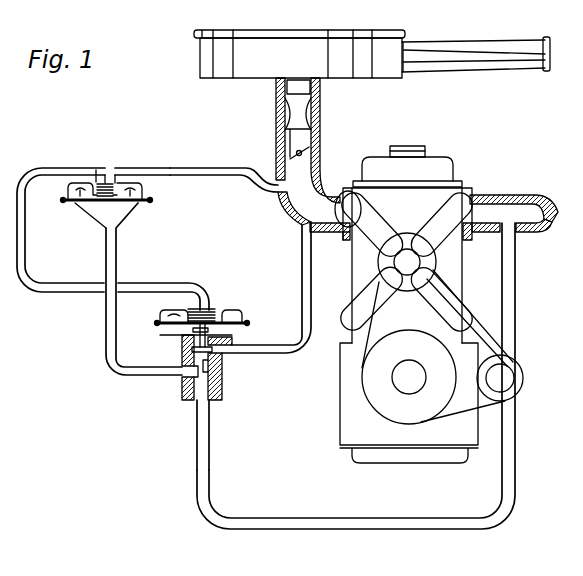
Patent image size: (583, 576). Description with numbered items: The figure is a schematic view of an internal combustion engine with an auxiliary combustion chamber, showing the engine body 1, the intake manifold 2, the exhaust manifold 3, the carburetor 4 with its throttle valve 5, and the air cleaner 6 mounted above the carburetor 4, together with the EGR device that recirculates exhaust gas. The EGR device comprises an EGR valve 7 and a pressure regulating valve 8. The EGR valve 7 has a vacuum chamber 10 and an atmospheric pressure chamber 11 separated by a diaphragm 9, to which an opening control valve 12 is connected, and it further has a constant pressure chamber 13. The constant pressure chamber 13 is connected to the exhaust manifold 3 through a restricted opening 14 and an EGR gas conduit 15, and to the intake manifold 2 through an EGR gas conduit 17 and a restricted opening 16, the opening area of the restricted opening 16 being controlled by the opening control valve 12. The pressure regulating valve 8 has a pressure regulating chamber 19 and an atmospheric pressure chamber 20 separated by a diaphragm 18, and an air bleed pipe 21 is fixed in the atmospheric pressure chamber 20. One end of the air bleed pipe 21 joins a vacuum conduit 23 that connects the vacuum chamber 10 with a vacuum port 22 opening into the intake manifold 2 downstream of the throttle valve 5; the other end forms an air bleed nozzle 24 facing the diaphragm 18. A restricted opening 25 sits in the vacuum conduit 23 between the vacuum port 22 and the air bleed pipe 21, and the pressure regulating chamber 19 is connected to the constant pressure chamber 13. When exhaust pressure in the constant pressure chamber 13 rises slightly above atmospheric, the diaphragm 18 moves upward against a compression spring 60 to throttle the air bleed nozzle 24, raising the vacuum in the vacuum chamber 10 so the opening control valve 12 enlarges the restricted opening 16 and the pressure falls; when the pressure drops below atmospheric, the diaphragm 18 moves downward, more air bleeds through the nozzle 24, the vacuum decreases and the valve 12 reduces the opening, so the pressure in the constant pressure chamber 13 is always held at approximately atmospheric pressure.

The engine body 1 is at (438, 190).
The intake manifold 2 is at (318, 176).
The exhaust manifold 3 is at (515, 197).
The carburetor 4 is at (293, 111).
The throttle valve 5 is at (290, 131).
The air cleaner 6 is at (361, 43).
The EGR valve 7 is at (222, 302).
The pressure regulating valve 8 is at (134, 216).
The diaphragm 9 is at (240, 338).
The vacuum chamber 10 is at (170, 312).
The atmospheric pressure chamber 11 is at (176, 334).
The opening control valve 12 is at (218, 347).
The constant pressure chamber 13 is at (224, 370).
The restricted opening 14 is at (214, 398).
The EGR gas conduit 15 is at (350, 530).
The restricted opening 16 is at (183, 377).
The EGR gas conduit 17 is at (302, 296).
The diaphragm 18 is at (78, 202).
The pressure regulating chamber 19 is at (88, 205).
The atmospheric pressure chamber 20 is at (146, 180).
The air bleed pipe 21 is at (104, 180).
The vacuum port 22 is at (280, 191).
The vacuum conduit 23 is at (200, 168).
The air bleed nozzle 24 is at (116, 208).
The restricted opening 25 is at (128, 168).
The compression spring 60 is at (95, 186).